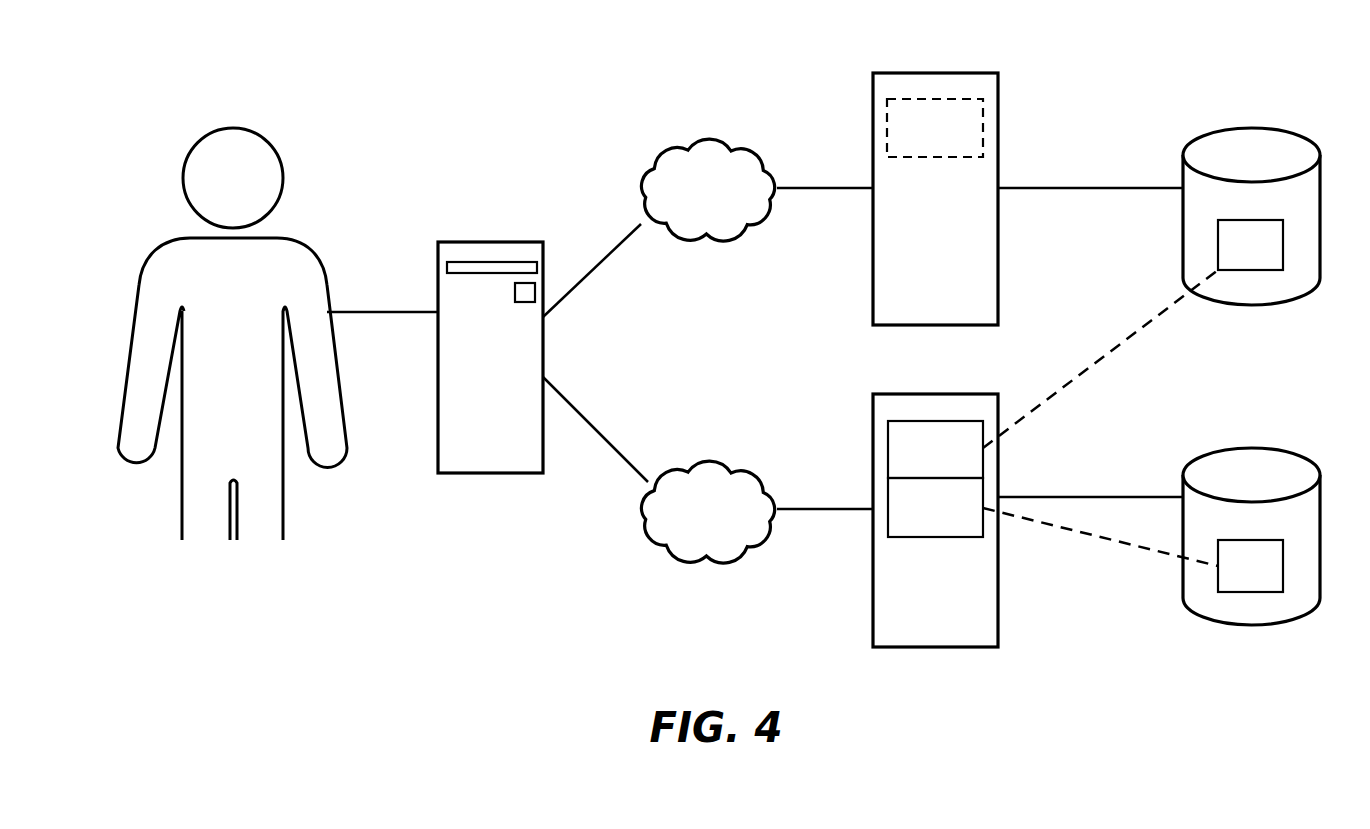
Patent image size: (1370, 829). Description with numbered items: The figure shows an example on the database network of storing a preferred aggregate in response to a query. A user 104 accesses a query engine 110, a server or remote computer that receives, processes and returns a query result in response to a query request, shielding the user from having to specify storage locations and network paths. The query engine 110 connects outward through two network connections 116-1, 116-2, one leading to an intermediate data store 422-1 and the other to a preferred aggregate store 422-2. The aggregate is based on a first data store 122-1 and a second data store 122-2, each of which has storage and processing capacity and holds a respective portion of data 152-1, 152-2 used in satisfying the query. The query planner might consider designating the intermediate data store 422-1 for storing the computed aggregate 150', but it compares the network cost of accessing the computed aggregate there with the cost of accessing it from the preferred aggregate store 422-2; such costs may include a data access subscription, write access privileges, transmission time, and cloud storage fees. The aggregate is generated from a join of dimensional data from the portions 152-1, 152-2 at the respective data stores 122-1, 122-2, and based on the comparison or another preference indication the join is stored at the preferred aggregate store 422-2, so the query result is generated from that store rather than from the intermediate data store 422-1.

The user 104 is at (233, 126).
The query engine 110 is at (470, 437).
The network 116-1 is at (675, 205).
The network 116-2 is at (675, 527).
The intermediate data store 422-1 is at (935, 199).
The preferred aggregate store 422-2 is at (935, 520).
The computed aggregate 150' is at (935, 128).
The portion of data 152-1 is at (935, 449).
The portion of data 152-2 is at (935, 507).
The first data store 122-1 is at (1220, 165).
The second data store 122-2 is at (1220, 490).